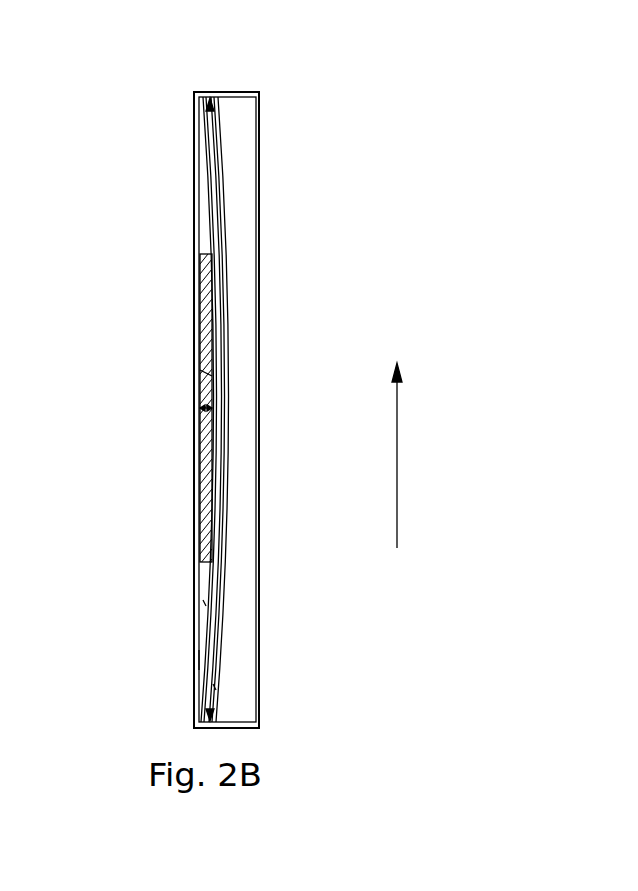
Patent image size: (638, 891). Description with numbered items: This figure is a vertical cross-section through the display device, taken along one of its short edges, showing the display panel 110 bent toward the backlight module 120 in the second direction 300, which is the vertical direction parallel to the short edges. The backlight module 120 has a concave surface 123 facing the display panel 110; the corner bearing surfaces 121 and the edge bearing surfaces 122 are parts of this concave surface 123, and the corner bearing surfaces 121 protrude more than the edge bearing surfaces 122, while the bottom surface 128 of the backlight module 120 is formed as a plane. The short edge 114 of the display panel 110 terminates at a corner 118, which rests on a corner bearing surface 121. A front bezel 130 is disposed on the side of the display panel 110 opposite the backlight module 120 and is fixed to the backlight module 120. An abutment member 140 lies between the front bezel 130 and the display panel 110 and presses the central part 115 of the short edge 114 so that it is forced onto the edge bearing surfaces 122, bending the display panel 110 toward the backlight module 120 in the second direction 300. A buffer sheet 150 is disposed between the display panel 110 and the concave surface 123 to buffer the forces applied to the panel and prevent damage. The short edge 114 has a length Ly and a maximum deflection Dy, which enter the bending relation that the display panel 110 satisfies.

The display panel 110 is at (193, 660).
The short edge 114 is at (212, 205).
The central part of the short edge 115 is at (210, 373).
The corner 118 is at (205, 113).
The backlight module 120 is at (238, 110).
The corner bearing surface 121 is at (207, 128).
The edge bearing surface 122 is at (222, 397).
The concave surface 123 is at (355, 153).
The bottom surface 128 is at (259, 505).
The front bezel 130 is at (203, 603).
The abutment member 140 is at (210, 312).
The buffer sheet 150 is at (215, 687).
The second direction 300 is at (398, 462).
The maximum deflection of the short edge Dy is at (207, 412).
The length of the short edge Ly is at (220, 605).